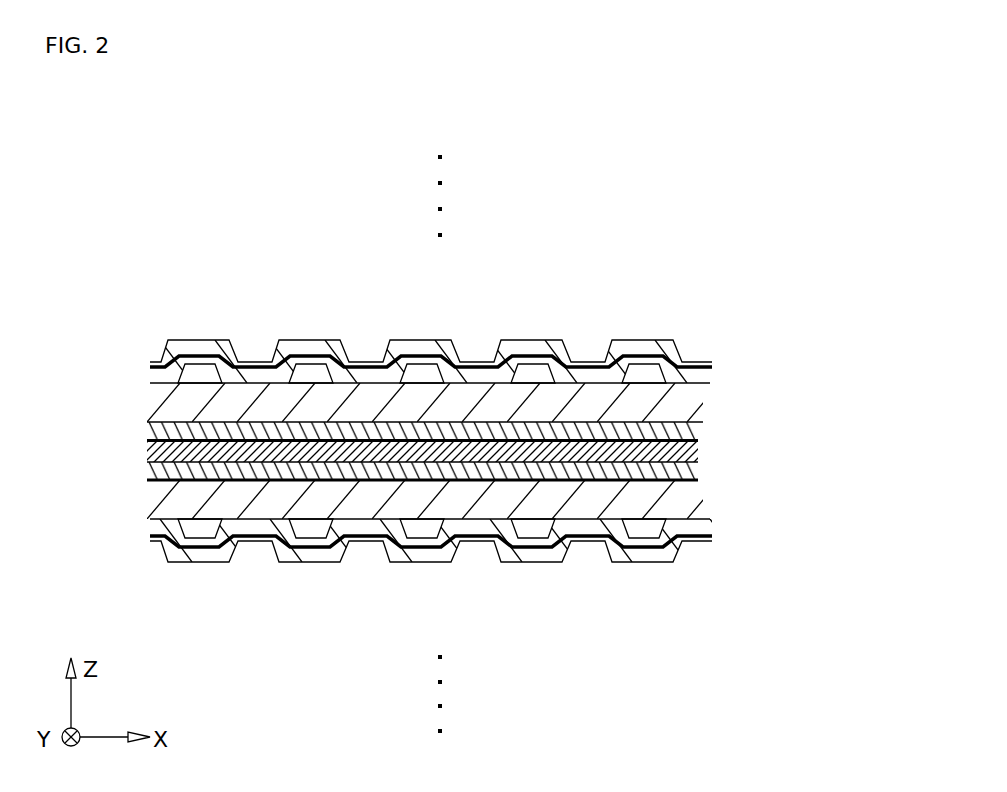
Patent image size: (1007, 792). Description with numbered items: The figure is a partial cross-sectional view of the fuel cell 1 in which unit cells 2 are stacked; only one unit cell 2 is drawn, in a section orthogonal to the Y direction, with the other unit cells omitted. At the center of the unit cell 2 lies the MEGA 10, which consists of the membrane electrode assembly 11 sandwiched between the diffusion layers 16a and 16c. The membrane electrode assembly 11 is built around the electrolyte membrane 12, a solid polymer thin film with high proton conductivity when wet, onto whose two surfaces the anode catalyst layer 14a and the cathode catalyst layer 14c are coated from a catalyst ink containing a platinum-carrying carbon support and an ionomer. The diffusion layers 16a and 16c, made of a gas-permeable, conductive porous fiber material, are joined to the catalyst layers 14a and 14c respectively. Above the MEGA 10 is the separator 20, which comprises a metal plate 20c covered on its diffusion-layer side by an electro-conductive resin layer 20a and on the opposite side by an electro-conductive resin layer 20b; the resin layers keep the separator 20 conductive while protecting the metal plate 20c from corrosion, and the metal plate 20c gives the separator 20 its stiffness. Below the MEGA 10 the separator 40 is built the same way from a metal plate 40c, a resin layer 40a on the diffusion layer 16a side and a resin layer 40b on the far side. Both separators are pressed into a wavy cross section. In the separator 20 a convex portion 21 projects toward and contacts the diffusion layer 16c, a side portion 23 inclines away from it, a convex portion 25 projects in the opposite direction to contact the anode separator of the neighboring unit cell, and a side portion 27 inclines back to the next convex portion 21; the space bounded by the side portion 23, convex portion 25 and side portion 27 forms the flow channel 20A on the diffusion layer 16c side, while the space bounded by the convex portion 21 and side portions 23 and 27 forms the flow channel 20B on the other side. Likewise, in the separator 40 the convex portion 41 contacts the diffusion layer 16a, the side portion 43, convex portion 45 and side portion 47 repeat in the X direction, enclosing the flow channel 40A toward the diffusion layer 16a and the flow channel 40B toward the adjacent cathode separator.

The fuel cell 1 is at (544, 428).
The unit cell 2 is at (541, 442).
The MEGA 10 is at (541, 451).
The membrane electrode assembly 11 is at (519, 458).
The electrolyte membrane 12 is at (456, 458).
The anode catalyst layer 14a is at (500, 479).
The cathode catalyst layer 14c is at (499, 437).
The diffusion layer 16a is at (458, 499).
The diffusion layer 16c is at (464, 405).
The separator 20 is at (482, 317).
The electro-conductive resin layer 20a is at (482, 385).
The electro-conductive resin layer 20b is at (477, 342).
The metal plate 20c is at (481, 367).
The flow channel 20A is at (422, 336).
The flow channel 20B is at (431, 319).
The convex portion 21 is at (410, 321).
The side portion 23 is at (409, 296).
The convex portion 25 is at (420, 313).
The side portion 27 is at (476, 318).
The separator 40 is at (482, 587).
The electro-conductive resin layer 40a is at (482, 524).
The electro-conductive resin layer 40b is at (477, 564).
The metal plate 40c is at (481, 544).
The flow channel 40A is at (422, 567).
The flow channel 40B is at (431, 567).
The convex portion 41 is at (423, 588).
The side portion 43 is at (409, 602).
The convex portion 45 is at (420, 591).
The side portion 47 is at (476, 584).